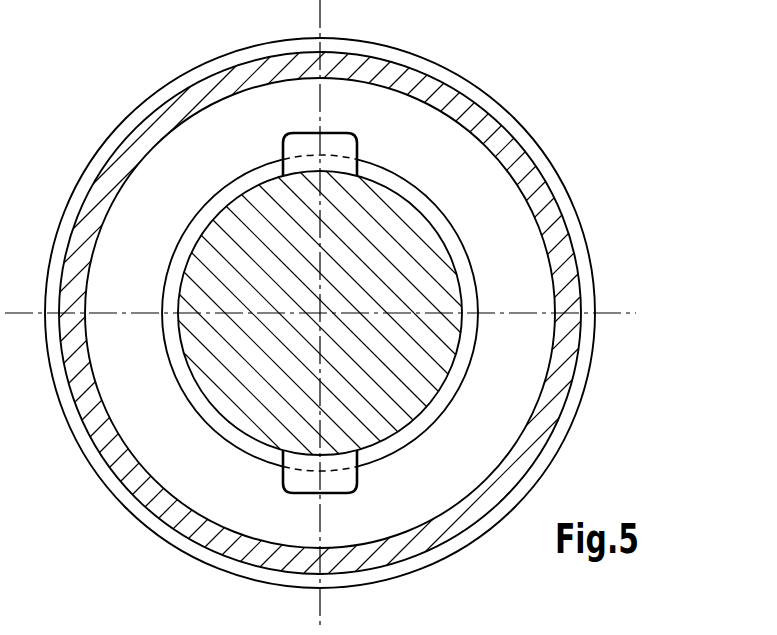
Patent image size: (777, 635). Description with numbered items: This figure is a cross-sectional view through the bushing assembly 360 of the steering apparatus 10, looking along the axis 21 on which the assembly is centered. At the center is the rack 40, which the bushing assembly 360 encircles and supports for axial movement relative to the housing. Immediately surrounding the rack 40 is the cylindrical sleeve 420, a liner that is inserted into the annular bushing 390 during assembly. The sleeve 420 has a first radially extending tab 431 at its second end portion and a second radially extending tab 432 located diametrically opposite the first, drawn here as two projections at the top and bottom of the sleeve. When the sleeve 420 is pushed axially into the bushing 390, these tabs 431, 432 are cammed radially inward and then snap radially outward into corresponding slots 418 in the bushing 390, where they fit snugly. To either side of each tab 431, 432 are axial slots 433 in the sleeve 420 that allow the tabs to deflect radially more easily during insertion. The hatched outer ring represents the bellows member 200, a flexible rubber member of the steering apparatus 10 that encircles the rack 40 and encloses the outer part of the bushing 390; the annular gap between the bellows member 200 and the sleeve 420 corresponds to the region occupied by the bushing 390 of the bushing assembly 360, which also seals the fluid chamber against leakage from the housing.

The steering apparatus 10 is at (590, 102).
The axis 21 is at (318, 313).
The rack 40 is at (403, 212).
The bellows member 200 is at (552, 220).
The bushing assembly 360 is at (608, 140).
The annular bushing 390 is at (527, 267).
The slots 418 is at (333, 130).
The sleeve 420 is at (465, 357).
The first radially extending tab 431 is at (303, 137).
The second radially extending tab 432 is at (305, 484).
The axial slots 433 is at (268, 168).